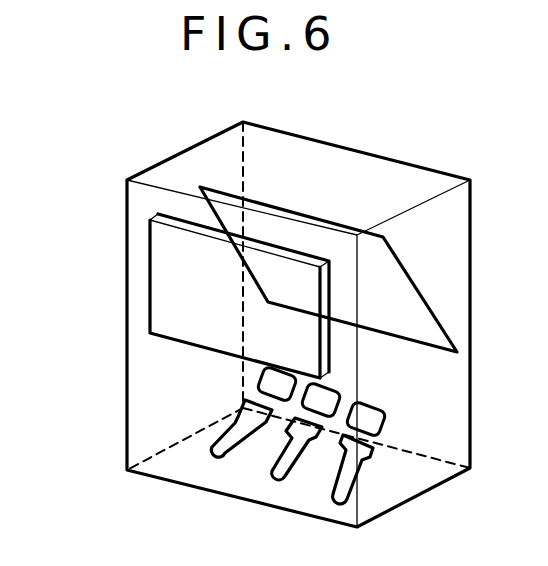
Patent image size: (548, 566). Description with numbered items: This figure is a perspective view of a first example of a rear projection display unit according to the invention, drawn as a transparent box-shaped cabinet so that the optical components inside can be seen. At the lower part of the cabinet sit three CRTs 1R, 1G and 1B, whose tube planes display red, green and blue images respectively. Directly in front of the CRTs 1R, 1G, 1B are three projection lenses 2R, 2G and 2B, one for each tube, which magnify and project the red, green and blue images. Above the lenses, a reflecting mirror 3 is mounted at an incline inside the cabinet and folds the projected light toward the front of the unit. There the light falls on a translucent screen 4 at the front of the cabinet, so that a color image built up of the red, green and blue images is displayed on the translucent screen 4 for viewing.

The reflecting mirror 3 is at (419, 287).
The translucent screen 4 is at (162, 293).
The projection lens 2R is at (257, 372).
The projection lens 2G is at (337, 386).
The projection lens 2B is at (386, 421).
The CRT 1R is at (214, 450).
The CRT 1G is at (276, 475).
The CRT 1B is at (361, 462).